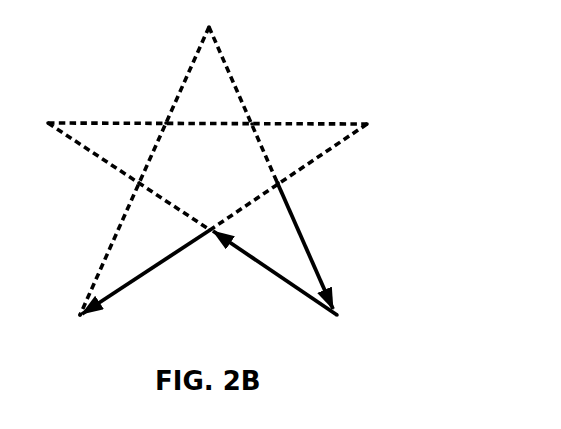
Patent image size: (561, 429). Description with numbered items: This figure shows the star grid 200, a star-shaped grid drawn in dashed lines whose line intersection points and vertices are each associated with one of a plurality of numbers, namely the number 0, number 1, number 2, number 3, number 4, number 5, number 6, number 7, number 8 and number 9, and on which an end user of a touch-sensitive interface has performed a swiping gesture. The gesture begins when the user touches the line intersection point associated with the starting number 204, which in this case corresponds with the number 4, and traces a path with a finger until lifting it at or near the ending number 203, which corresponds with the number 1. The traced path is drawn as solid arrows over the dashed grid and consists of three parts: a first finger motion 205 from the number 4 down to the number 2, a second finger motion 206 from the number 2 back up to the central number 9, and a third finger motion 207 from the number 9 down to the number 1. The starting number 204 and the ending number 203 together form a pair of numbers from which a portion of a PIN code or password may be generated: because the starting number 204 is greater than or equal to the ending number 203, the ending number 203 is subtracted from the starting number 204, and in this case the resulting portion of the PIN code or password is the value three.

The star grid 200 is at (223, 60).
The ending number 203 is at (62, 316).
The starting number 204 is at (320, 196).
The first finger motion 205 is at (315, 256).
The second finger motion 206 is at (278, 283).
The third finger motion 207 is at (117, 298).
The number 0 is at (156, 111).
The number 1 is at (71, 327).
The number 2 is at (346, 328).
The number 3 is at (119, 196).
The number 4 is at (296, 195).
The number 5 is at (210, 16).
The number 6 is at (261, 112).
The number 7 is at (377, 123).
The number 8 is at (38, 123).
The number 9 is at (209, 248).